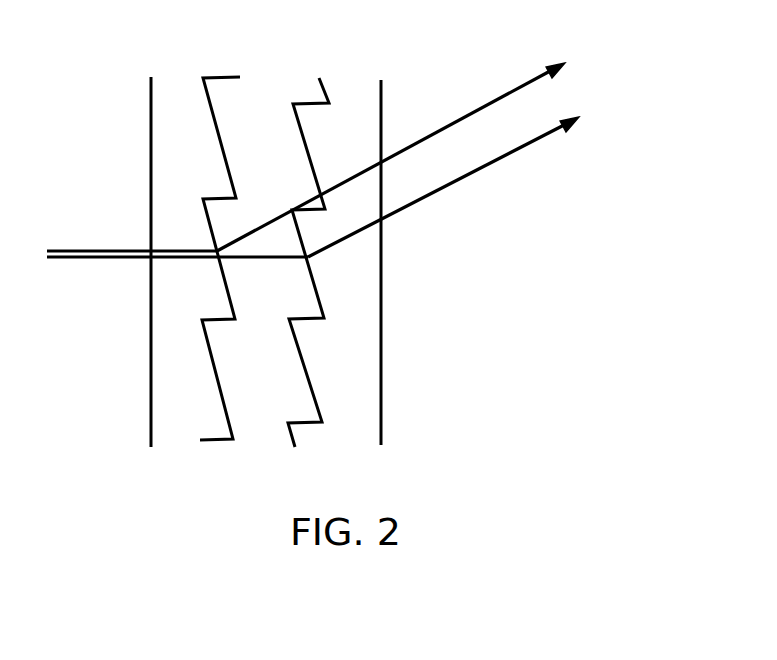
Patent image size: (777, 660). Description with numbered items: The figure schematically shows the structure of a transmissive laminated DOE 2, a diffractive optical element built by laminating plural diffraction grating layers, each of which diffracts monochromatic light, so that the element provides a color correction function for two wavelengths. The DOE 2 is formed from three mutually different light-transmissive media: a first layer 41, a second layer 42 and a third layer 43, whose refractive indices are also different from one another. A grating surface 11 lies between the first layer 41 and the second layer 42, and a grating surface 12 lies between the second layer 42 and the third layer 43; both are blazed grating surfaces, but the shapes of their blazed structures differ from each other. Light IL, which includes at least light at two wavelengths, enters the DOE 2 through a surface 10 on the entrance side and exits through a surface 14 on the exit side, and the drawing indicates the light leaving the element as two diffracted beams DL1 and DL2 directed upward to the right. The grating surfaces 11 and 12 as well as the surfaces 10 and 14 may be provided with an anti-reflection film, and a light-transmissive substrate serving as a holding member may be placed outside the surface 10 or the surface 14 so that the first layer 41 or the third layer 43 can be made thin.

The transmissive laminated DOE 2 is at (381, 60).
The surface 10 is at (153, 400).
The grating surface 11 is at (228, 405).
The grating surface 12 is at (318, 400).
The surface 14 is at (383, 412).
The first layer 41 is at (183, 339).
The second layer 42 is at (261, 339).
The third layer 43 is at (345, 339).
The light IL is at (177, 276).
The first diffracted light DL1 is at (411, 153).
The second diffracted light DL2 is at (457, 174).